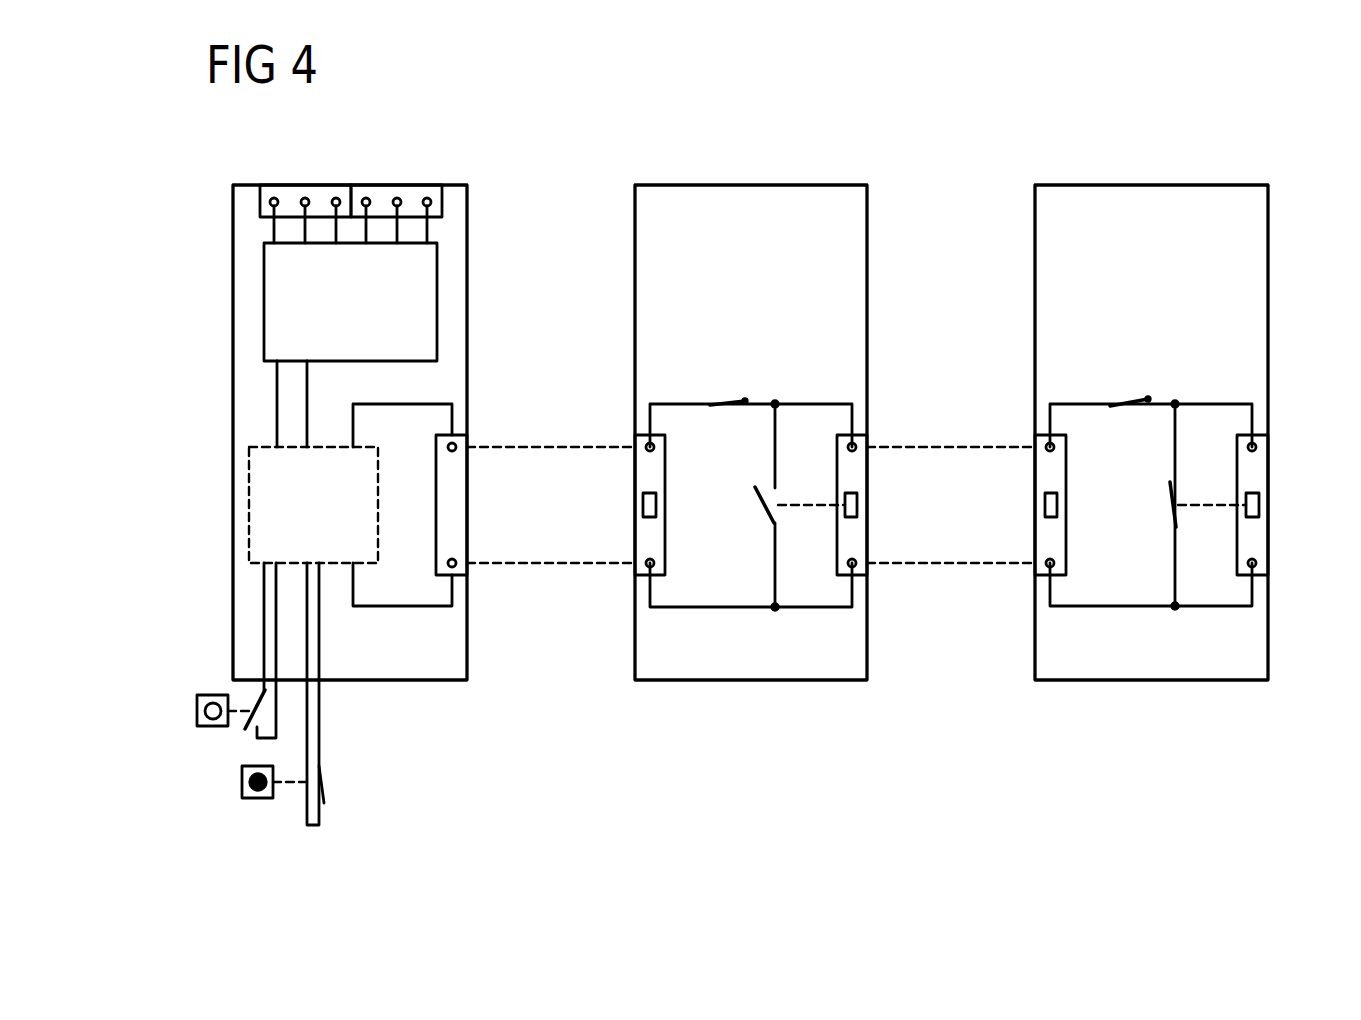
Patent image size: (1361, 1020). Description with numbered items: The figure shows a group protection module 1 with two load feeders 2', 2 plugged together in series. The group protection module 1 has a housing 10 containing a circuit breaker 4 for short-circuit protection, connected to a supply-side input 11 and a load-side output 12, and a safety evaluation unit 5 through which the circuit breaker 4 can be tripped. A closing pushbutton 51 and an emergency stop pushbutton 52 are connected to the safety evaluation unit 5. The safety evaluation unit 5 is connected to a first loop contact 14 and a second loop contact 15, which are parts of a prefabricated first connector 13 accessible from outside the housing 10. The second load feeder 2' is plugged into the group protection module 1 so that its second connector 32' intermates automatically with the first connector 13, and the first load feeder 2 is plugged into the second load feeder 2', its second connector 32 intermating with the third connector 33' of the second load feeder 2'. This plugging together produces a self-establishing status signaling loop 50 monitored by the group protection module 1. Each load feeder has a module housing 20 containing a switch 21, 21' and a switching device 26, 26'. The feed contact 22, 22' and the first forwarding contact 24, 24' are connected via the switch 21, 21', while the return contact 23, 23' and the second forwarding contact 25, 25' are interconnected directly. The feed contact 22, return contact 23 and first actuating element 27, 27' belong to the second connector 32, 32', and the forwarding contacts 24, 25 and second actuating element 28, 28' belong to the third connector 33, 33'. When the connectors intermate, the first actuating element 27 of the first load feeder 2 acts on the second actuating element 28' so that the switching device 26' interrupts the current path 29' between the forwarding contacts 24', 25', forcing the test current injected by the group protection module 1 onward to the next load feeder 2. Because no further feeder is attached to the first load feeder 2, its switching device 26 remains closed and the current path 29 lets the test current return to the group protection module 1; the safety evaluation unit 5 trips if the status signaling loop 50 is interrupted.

The group protection module 1 is at (432, 665).
The first load feeder 2 is at (1151, 470).
The second load feeder 2' is at (751, 470).
The circuit breaker 4 is at (430, 269).
The safety evaluation unit 5 is at (268, 504).
The housing 10 is at (468, 360).
The supply-side input 11 is at (293, 193).
The load-side output 12 is at (415, 193).
The first connector 13 is at (450, 500).
The first loop contact 14 is at (470, 445).
The second loop contact 15 is at (470, 572).
The module housing 20 is at (868, 362).
The switch 21 is at (1127, 361).
The switch 21' is at (727, 360).
The feed contact 22 is at (1013, 420).
The feed contact 22' is at (612, 420).
The return contact 23 is at (1013, 592).
The return contact 23' is at (612, 592).
The first forwarding contact 24 is at (1287, 420).
The first forwarding contact 24' is at (889, 420).
The second forwarding contact 25 is at (1287, 592).
The second forwarding contact 25' is at (889, 592).
The switching device 26 is at (1136, 520).
The switching device 26' is at (733, 522).
The first actuating element 27 is at (1084, 503).
The first actuating element 27' is at (685, 503).
The second actuating element 28 is at (1286, 503).
The second actuating element 28' is at (887, 503).
The current path 29 is at (1199, 461).
The current path 29' is at (801, 402).
The second connector 32 is at (1019, 505).
The second connector 32' is at (618, 505).
The third connector 33 is at (1282, 505).
The third connector 33' is at (883, 505).
The status signaling loop 50 is at (547, 445).
The closing pushbutton 51 is at (210, 728).
The emergency stop pushbutton 52 is at (258, 800).